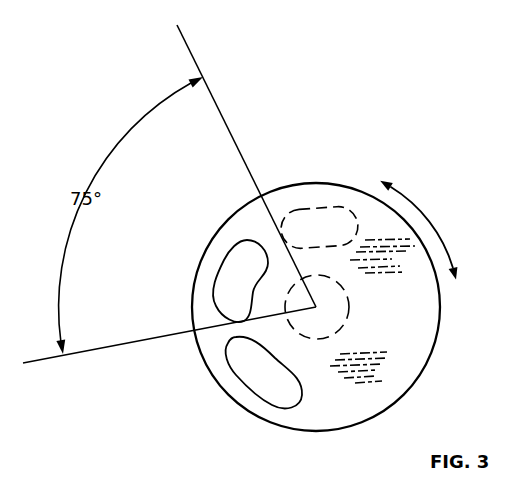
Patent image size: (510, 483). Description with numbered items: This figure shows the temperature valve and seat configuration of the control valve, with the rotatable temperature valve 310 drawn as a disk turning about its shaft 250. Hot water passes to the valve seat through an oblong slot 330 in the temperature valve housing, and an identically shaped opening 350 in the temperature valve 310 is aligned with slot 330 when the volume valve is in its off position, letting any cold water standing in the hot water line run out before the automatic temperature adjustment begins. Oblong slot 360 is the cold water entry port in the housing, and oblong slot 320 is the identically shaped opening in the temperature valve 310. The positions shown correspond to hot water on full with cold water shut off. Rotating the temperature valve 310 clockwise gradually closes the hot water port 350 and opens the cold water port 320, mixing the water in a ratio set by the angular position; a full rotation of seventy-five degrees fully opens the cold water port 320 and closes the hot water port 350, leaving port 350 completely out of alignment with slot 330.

The shaft 250 is at (353, 304).
The temperature valve 310 is at (440, 307).
The cold water port 320 is at (232, 270).
The oblong slot 330 is at (237, 371).
The hot water port 350 is at (267, 388).
The oblong slot 360 is at (326, 210).